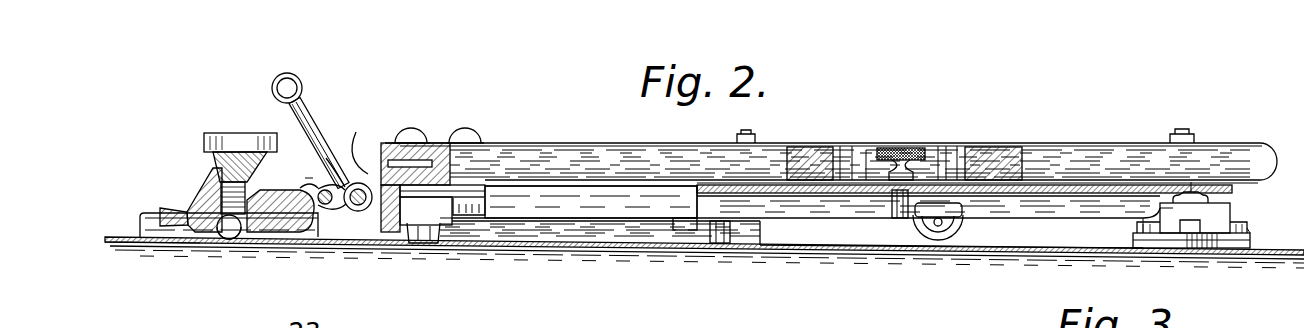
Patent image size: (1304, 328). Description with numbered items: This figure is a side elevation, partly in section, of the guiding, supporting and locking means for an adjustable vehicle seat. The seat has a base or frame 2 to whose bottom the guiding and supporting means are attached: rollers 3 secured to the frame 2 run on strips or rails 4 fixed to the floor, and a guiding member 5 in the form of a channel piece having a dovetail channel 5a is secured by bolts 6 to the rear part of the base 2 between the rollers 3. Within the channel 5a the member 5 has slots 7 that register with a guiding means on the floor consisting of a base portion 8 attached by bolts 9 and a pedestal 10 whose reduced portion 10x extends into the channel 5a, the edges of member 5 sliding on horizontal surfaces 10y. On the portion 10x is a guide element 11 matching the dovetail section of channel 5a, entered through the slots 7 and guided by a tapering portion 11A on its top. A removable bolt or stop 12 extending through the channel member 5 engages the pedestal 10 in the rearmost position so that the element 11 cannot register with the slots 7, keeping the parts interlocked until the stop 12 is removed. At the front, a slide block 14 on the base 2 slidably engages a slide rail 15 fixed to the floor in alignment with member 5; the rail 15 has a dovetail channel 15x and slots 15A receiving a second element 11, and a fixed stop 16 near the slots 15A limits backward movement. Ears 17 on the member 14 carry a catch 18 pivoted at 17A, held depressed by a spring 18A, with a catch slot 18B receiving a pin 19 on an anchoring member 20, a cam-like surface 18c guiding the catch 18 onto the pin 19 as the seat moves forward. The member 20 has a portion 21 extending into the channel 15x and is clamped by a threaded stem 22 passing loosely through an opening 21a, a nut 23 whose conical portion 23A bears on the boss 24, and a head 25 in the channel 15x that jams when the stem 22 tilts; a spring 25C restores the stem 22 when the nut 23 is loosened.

The base or frame 2 is at (582, 162).
The rollers 3 is at (950, 247).
The strips or rails 4 is at (1025, 250).
The guiding member 5 is at (813, 190).
The dovetail groove or channel 5a is at (993, 207).
The bolts 6 is at (750, 141).
The recesses or slots 7 is at (915, 226).
The base portion 8 is at (1220, 248).
The bolts 9 is at (1247, 230).
The pedestal 10 is at (1170, 226).
The reduced portion 10x is at (1160, 213).
The horizontal surfaces 10y is at (445, 232).
The guide element 11 is at (1215, 203).
The tapering portion 11A is at (1197, 195).
The removable bolt or stop 12 is at (915, 146).
The slide block or guiding member 14 is at (362, 175).
The guiding member or slide rail 15 is at (613, 217).
The dovetail channel or groove 15x is at (597, 238).
The slots or recesses 15A is at (690, 232).
The fixed stop 16 is at (722, 243).
The ears 17 is at (365, 170).
The pivot 17A is at (350, 176).
The catch or locking member 18 is at (301, 100).
The spring 18A is at (362, 211).
The catch slot 18B is at (323, 206).
The cam-like guiding surface 18c is at (302, 188).
The pin or stud 19 is at (313, 173).
The locking or anchoring member 20 is at (195, 182).
The portion 21 is at (177, 213).
The opening 21a is at (203, 232).
The threaded stem 22 is at (213, 237).
The nut 23 is at (228, 150).
The conical portion 23A is at (215, 138).
The semiannular upper portion or boss 24 is at (210, 168).
The head 25 is at (229, 229).
The spring 25C is at (262, 234).